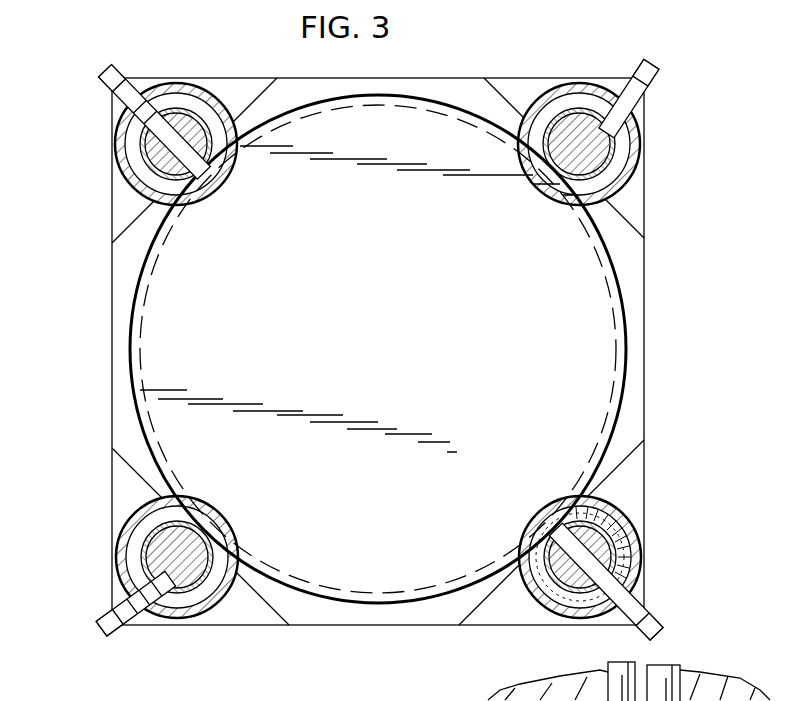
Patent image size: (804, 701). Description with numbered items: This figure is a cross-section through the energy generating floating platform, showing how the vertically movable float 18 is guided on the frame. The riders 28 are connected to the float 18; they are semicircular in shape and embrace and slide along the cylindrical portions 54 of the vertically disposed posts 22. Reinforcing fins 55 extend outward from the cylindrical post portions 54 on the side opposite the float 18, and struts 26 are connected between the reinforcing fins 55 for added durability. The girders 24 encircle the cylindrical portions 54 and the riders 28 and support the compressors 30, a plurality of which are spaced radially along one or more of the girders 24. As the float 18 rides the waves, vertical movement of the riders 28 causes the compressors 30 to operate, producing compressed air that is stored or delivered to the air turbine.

The float 18 is at (603, 330).
The posts 22 is at (125, 146).
The girders 24 is at (218, 117).
The struts 26 is at (113, 325).
The riders 28 is at (176, 112).
The compressors 30 is at (637, 545).
The cylindrical portions 54 is at (160, 168).
The reinforcing fins 55 is at (115, 632).